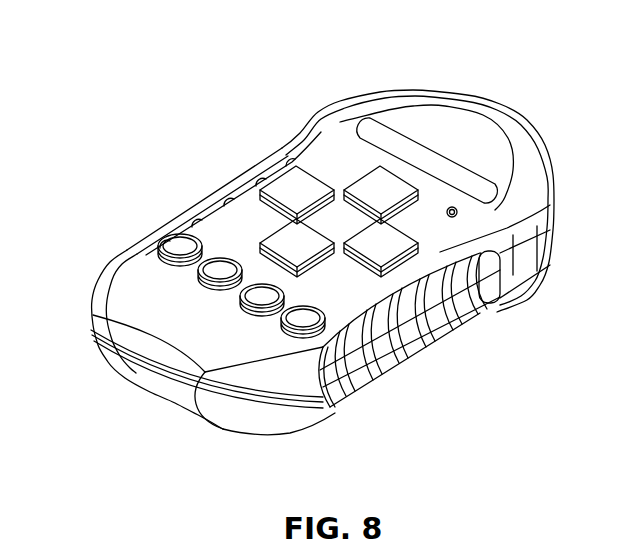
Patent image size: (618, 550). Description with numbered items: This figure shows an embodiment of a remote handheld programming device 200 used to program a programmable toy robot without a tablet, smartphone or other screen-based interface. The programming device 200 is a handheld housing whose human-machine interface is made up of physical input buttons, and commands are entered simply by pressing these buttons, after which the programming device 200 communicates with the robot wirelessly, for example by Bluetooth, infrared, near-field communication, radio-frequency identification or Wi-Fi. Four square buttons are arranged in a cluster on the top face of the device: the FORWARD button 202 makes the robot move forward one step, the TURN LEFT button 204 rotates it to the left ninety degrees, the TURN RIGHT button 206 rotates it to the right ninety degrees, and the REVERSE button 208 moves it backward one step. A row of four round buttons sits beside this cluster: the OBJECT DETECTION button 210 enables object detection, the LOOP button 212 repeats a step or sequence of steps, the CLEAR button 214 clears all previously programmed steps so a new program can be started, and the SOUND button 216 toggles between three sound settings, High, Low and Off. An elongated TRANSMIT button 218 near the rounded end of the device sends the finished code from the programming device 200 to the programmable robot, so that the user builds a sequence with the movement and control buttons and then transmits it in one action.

The remote handheld programming device 200 is at (291, 101).
The FORWARD button 202 is at (383, 187).
The TURN LEFT button 204 is at (297, 192).
The TURN RIGHT button 206 is at (388, 243).
The REVERSE button 208 is at (297, 245).
The OBJECT DETECTION button 210 is at (180, 250).
The LOOP button 212 is at (218, 275).
The CLEAR button 214 is at (263, 296).
The SOUND button 216 is at (303, 318).
The TRANSMIT button 218 is at (445, 142).